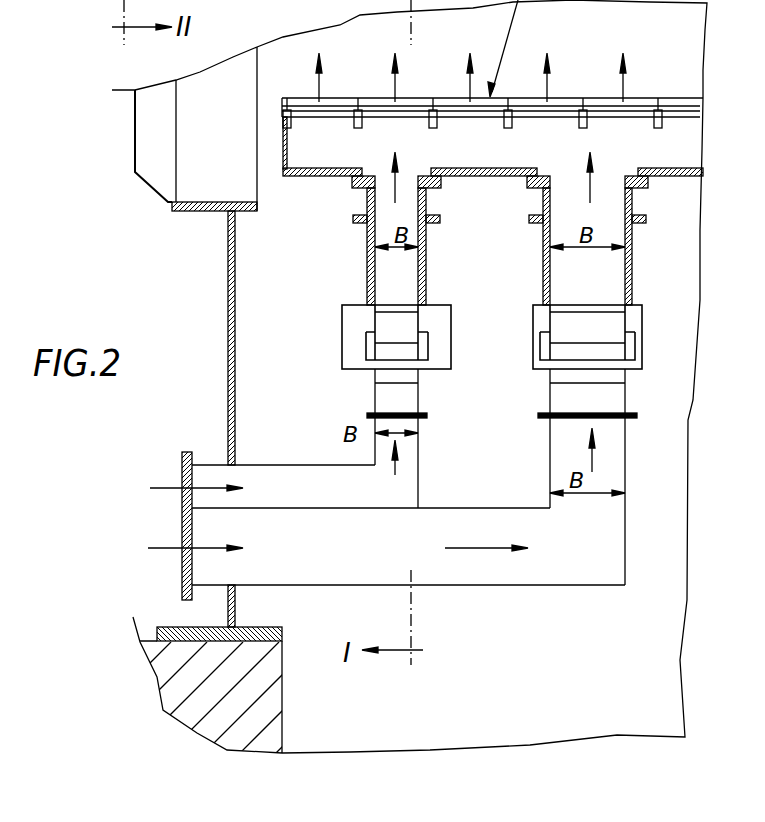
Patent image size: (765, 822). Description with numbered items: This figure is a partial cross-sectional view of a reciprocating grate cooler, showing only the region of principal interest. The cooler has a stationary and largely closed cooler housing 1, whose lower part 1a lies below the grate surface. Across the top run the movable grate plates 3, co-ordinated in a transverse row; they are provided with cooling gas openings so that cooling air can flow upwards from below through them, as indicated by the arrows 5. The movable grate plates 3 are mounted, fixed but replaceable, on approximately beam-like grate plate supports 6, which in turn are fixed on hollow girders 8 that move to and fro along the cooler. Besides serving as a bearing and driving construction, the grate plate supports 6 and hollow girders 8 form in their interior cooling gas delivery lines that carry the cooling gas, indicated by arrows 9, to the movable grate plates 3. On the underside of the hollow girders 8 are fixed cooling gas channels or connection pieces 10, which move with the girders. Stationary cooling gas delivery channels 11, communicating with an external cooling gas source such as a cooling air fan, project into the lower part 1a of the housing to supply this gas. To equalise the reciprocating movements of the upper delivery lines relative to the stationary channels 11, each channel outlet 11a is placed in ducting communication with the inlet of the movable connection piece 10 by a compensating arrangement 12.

The cooler housing 1 is at (122, 138).
The lower part of the cooler housing 1a is at (257, 297).
The movable grate plates 3 is at (599, 90).
The arrows indicating cooling gas flow 5 is at (395, 86).
The grate plate supports 6 is at (316, 176).
The hollow girders 8 is at (538, 202).
The arrows indicating cooling gas delivery 9 is at (395, 185).
The cooling gas channels or connection pieces 10 is at (380, 263).
The stationary cooling gas delivery channels 11 is at (270, 465).
The outlet of the cooling gas delivery channel 11a is at (393, 397).
The compensating arrangements 12 is at (350, 339).